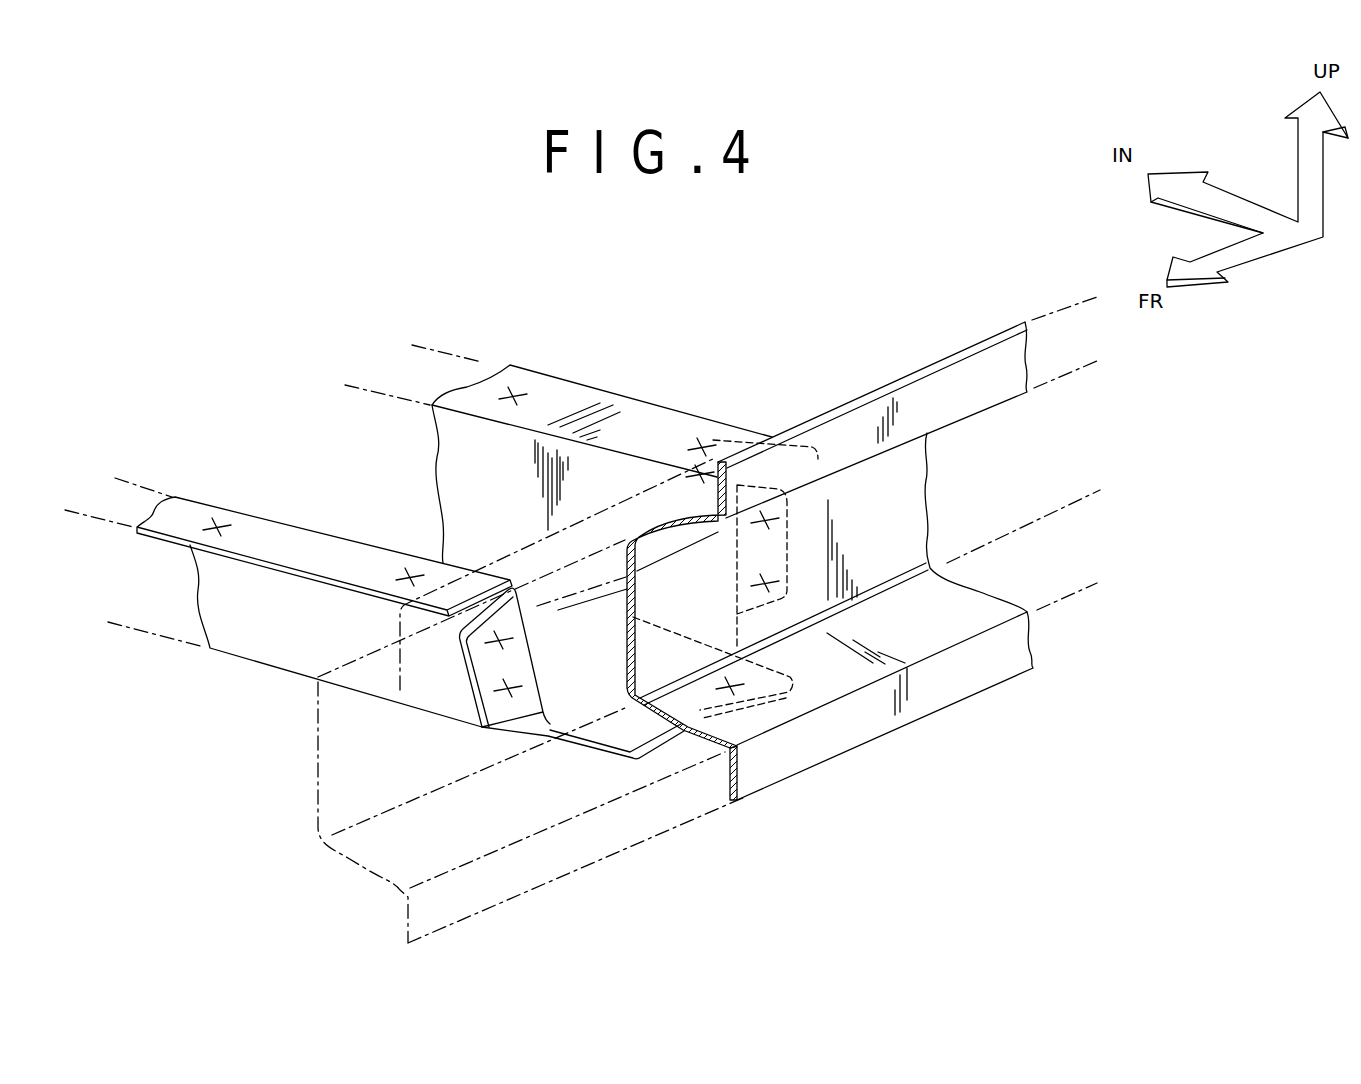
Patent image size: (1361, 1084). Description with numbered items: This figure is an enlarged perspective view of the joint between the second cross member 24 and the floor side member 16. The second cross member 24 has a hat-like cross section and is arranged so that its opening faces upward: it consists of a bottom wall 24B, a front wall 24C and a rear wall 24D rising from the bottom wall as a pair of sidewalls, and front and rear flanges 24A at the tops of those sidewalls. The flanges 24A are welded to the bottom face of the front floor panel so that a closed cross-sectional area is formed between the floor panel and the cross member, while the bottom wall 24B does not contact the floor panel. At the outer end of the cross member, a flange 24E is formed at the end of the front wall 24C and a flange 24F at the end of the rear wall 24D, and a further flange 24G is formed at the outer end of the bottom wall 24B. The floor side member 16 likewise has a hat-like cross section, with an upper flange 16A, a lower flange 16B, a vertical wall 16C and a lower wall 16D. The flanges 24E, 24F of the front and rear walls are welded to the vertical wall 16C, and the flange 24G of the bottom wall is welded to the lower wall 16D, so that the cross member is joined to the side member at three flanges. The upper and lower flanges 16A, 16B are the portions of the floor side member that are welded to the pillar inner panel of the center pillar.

The floor side member 16 is at (898, 744).
The upper flange 16A is at (847, 430).
The lower flange 16B is at (845, 727).
The vertical wall 16C is at (627, 638).
The lower wall 16D is at (703, 745).
The second cross member 24 is at (292, 687).
The flanges 24A is at (635, 423).
The bottom wall 24B is at (568, 700).
The front wall 24C is at (280, 640).
The rear wall 24D is at (462, 459).
The flange 24E is at (462, 683).
The flange 24F is at (778, 552).
The flange 24G is at (612, 753).